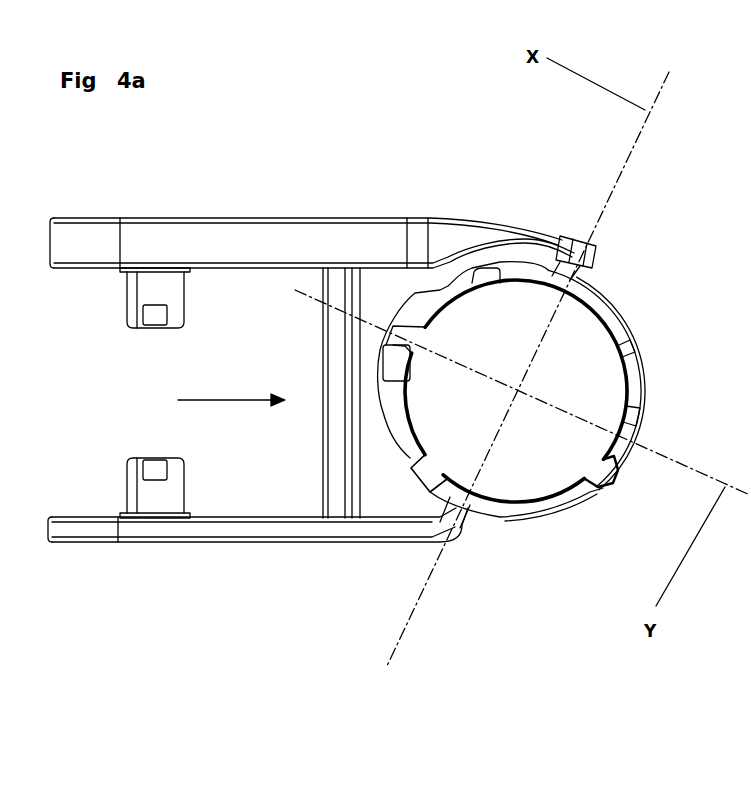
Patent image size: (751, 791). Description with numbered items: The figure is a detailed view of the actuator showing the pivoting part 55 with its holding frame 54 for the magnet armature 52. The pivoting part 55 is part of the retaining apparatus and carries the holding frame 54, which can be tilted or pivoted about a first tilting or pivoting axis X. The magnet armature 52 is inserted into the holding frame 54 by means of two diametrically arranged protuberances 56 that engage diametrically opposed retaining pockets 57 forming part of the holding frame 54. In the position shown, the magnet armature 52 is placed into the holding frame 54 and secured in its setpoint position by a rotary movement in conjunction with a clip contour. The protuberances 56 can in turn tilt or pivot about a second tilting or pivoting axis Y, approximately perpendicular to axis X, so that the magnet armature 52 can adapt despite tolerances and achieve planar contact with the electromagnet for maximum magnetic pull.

The magnet armature 52 is at (580, 322).
The holding frame 54 is at (632, 372).
The pivoting part 55 is at (214, 404).
The protuberances 56 is at (396, 328).
The retaining pockets 57 is at (395, 368).